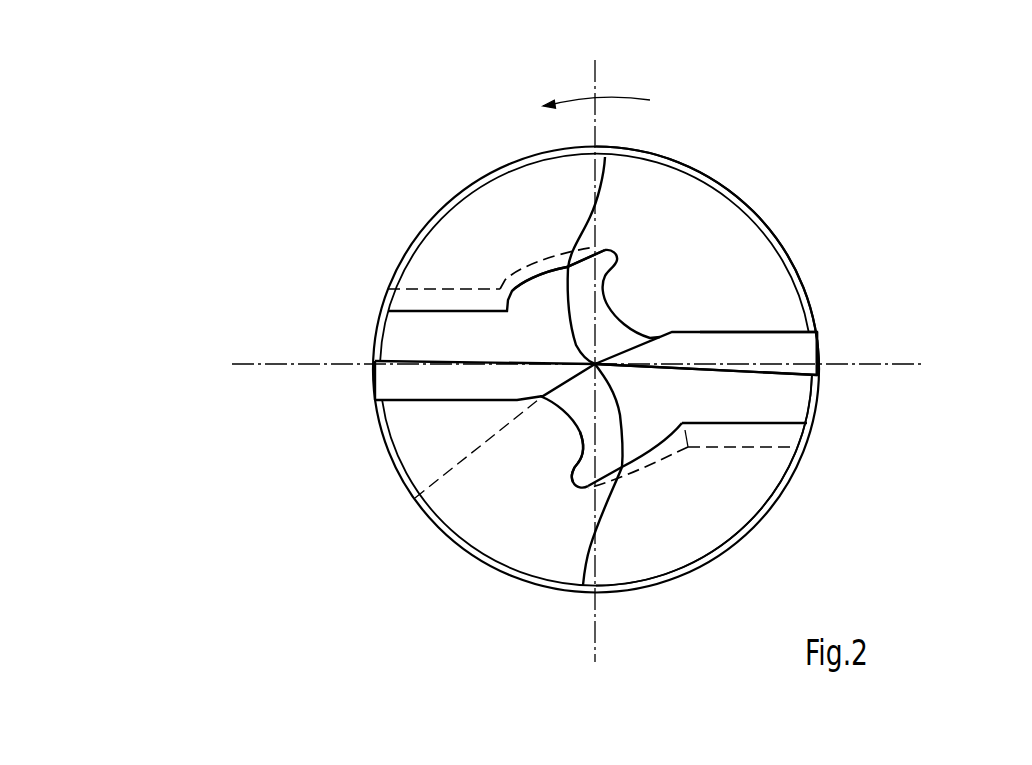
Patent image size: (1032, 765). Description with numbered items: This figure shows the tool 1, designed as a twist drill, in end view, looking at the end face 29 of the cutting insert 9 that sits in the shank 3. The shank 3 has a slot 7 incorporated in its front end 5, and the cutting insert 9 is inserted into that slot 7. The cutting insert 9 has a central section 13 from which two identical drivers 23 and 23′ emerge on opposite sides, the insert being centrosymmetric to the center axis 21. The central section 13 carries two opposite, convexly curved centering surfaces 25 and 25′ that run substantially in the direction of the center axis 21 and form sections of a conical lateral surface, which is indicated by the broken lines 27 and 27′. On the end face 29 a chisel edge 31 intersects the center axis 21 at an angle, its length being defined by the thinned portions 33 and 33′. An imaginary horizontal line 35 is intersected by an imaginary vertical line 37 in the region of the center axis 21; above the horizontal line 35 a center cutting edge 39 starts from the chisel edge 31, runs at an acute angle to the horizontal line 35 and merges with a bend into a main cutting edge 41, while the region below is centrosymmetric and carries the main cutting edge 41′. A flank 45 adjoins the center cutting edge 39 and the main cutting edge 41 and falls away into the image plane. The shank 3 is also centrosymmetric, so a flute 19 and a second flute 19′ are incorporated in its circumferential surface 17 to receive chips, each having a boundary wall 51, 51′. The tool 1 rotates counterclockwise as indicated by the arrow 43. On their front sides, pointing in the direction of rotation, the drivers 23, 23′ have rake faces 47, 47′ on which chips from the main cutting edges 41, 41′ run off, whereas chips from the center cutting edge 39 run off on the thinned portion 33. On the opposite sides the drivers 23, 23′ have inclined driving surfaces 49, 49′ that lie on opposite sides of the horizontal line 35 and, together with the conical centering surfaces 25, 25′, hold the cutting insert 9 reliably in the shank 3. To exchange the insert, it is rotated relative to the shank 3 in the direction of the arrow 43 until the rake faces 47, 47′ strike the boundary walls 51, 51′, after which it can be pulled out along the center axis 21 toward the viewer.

The tool 1 is at (842, 157).
The shank 3 is at (413, 233).
The front end 5 is at (420, 272).
The slot 7 is at (455, 288).
The cutting insert 9 is at (830, 345).
The central section 13 is at (655, 455).
The circumferential surface 17 is at (752, 543).
The flute 19 is at (718, 304).
The second flute 19′ is at (445, 457).
The center axis 21 is at (415, 498).
The driver 23 is at (790, 328).
The driver 23′ is at (368, 388).
The centering surface 25 is at (650, 463).
The centering surface 25′ is at (537, 270).
The broken line 27 is at (670, 460).
The broken line 27′ is at (510, 277).
The end face 29 is at (538, 350).
The chisel edge 31 is at (575, 443).
The thinned portion 33 is at (620, 305).
The thinned portion 33′ is at (574, 444).
The imaginary horizontal line 35 is at (915, 362).
The imaginary vertical line 37 is at (596, 627).
The center cutting edge 39 is at (720, 332).
The main cutting edge 41 is at (742, 332).
The main cutting edge 41′ is at (430, 402).
The arrow 43 is at (609, 92).
The flank 45 is at (757, 365).
The rake face 47 is at (789, 331).
The rake face 47′ is at (400, 405).
The driving surface 49 is at (770, 433).
The driving surface 49′ is at (410, 299).
The boundary wall 51 is at (603, 193).
The boundary wall 51′ is at (585, 550).